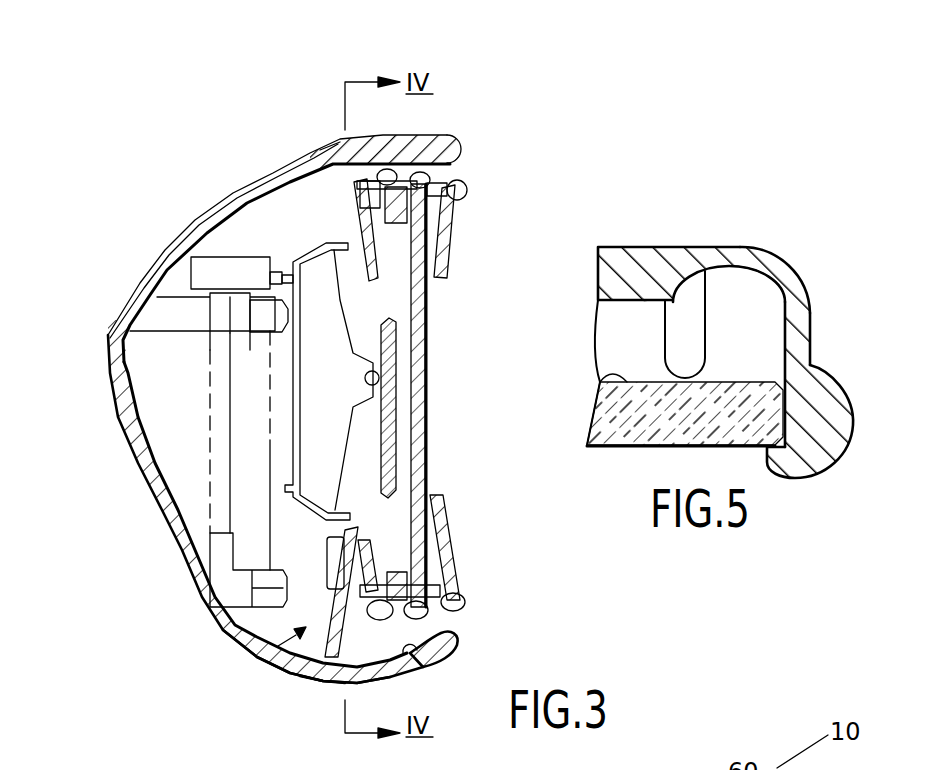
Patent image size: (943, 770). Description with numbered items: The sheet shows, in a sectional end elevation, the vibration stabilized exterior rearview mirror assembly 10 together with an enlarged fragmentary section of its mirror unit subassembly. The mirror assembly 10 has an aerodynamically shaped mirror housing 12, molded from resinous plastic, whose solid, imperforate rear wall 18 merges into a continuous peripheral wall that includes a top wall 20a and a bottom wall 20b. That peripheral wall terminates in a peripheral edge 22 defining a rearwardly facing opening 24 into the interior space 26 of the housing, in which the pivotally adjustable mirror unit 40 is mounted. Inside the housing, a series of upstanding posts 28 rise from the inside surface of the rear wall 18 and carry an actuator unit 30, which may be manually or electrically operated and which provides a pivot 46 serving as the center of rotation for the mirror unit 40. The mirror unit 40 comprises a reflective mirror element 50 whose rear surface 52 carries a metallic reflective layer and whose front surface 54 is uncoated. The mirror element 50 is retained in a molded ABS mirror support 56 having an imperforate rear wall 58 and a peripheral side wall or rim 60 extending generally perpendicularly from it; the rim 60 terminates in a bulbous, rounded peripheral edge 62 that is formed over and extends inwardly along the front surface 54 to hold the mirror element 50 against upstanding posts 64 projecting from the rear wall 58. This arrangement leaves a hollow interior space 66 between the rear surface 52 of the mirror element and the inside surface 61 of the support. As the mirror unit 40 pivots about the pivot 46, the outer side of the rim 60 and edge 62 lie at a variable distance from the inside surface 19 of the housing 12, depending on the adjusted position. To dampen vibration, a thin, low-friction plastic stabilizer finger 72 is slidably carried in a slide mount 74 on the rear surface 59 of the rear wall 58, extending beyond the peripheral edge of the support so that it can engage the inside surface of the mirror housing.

In FIG. 3, the mirror assembly 10 is at (240, 112).
In FIG. 3, the mirror housing 12 is at (228, 182).
In FIG. 3, the rear wall 18 is at (137, 472).
In FIG. 3, the inside surface of mirror housing 19 is at (428, 668).
In FIG. 3, the top wall 20a is at (405, 134).
In FIG. 3, the bottom wall 20b is at (323, 682).
In FIG. 3, the peripheral edge 22 is at (460, 150).
In FIG. 3, the rearwardly facing opening 24 is at (462, 168).
In FIG. 3, the interior space 26 is at (275, 645).
In FIG. 3, the upstanding supports or posts 28 is at (178, 310).
In FIG. 3, the actuator unit 30 is at (300, 242).
In FIG. 3, the mirror unit 40 is at (437, 466).
In FIG. 5, the mirror unit 40 is at (775, 200).
In FIG. 3, the pivot 46 is at (380, 377).
In FIG. 3, the mirror element 50 is at (427, 407).
In FIG. 5, the mirror element 50 is at (610, 410).
In FIG. 3, the rear surface of mirror element 52 is at (427, 307).
In FIG. 5, the rear surface of mirror element 52 is at (612, 370).
In FIG. 3, the front surface of mirror element 54 is at (343, 380).
In FIG. 5, the front surface of mirror element 54 is at (630, 448).
In FIG. 3, the mirror support 56 is at (337, 176).
In FIG. 5, the mirror support 56 is at (792, 251).
In FIG. 5, the rear wall of mirror support 58 is at (640, 250).
In FIG. 5, the rear surface of rear wall 59 is at (715, 246).
In FIG. 5, the peripheral side wall or rim 60 is at (802, 323).
In FIG. 5, the inside surface of mirror support 61 is at (627, 303).
In FIG. 3, the bulbous peripheral edge 62 is at (437, 618).
In FIG. 5, the bulbous peripheral edge 62 is at (830, 393).
In FIG. 5, the upstanding supports or posts 64 is at (690, 318).
In FIG. 5, the hollow interior space 66 is at (635, 330).
In FIG. 3, the vibration stabilizer 72 is at (320, 612).
In FIG. 3, the slide mount 74 is at (337, 553).